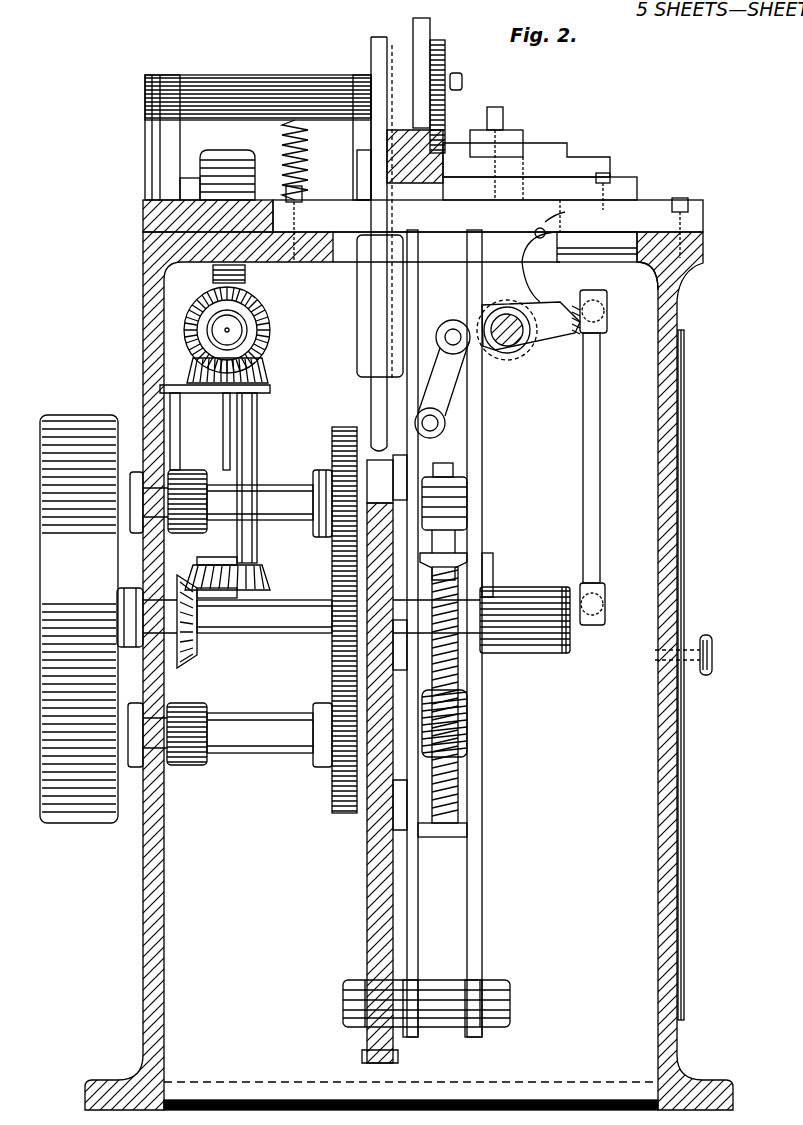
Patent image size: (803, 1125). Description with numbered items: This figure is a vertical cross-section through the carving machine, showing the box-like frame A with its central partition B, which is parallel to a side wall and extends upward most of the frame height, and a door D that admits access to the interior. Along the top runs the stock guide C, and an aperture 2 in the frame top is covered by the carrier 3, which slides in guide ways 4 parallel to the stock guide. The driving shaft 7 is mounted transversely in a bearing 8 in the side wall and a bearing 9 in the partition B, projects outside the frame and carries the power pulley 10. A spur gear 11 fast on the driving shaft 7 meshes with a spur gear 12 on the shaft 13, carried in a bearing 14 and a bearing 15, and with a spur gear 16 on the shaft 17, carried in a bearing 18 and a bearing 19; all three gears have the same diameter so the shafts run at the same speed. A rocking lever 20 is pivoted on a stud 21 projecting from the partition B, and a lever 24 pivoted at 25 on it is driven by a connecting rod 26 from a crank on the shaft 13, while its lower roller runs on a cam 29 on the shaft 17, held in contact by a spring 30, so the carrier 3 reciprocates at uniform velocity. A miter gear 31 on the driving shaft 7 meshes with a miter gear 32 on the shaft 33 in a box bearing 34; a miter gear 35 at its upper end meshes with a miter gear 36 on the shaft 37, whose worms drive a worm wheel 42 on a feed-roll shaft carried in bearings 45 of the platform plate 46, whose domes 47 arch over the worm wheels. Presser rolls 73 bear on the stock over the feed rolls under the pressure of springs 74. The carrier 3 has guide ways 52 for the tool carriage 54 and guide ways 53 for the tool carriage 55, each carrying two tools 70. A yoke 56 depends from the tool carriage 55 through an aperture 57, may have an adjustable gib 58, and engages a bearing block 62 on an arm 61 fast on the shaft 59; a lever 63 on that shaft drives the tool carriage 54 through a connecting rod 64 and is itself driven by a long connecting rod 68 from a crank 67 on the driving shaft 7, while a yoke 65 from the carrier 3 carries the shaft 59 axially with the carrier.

The aperture 2 is at (626, 265).
The carrier 3 is at (542, 232).
The guide ways 4 is at (325, 217).
The driving shaft 7 is at (228, 628).
The bearing 8 is at (137, 648).
The bearing 9 is at (497, 655).
The power pulley 10 is at (79, 619).
The spur gear 11 is at (344, 643).
The spur gear 12 is at (338, 466).
The shaft 13 is at (312, 515).
The bearing 14 is at (190, 480).
The bearing 15 is at (397, 470).
The spur gear 16 is at (338, 790).
The shaft 17 is at (265, 752).
The bearing 18 is at (187, 755).
The bearing 19 is at (398, 792).
The rocking lever 20 is at (476, 912).
The stud 21 is at (487, 985).
The lever 24 is at (447, 556).
The pivot 25 is at (495, 572).
The connecting rod 26 is at (456, 480).
The cam 29 is at (462, 767).
The spring 30 is at (458, 722).
The miter gear 31 is at (192, 655).
The miter gear 32 is at (262, 583).
The shaft 33 is at (228, 592).
The box bearing 34 is at (252, 450).
The miter gear 35 is at (266, 375).
The miter gear 36 is at (262, 322).
The shaft 37 is at (232, 330).
The worm wheel 42 is at (245, 270).
The bearings 45 is at (186, 180).
The platform plate 46 is at (183, 205).
The domes 47 is at (222, 160).
The guide ways 52 is at (360, 175).
The guide ways 53 is at (625, 178).
The tool carriage 54 is at (386, 66).
The tool carriage 55 is at (590, 160).
The yoke 56 is at (545, 272).
The aperture 57 is at (586, 216).
The adjustable gib 58 is at (567, 209).
The shaft 59 is at (510, 345).
The arm 61 is at (507, 307).
The bearing block 62 is at (560, 255).
The lever 63 is at (552, 332).
The connecting rod 64 is at (440, 360).
The yoke 65 is at (535, 282).
The crank 67 is at (588, 584).
The connecting rod 68 is at (590, 455).
The tools 70 is at (430, 32).
The presser rolls 73 is at (446, 58).
The springs 74 is at (286, 158).
The frame A is at (668, 858).
The partition B is at (368, 892).
The stock guide C is at (386, 143).
The door D is at (690, 600).